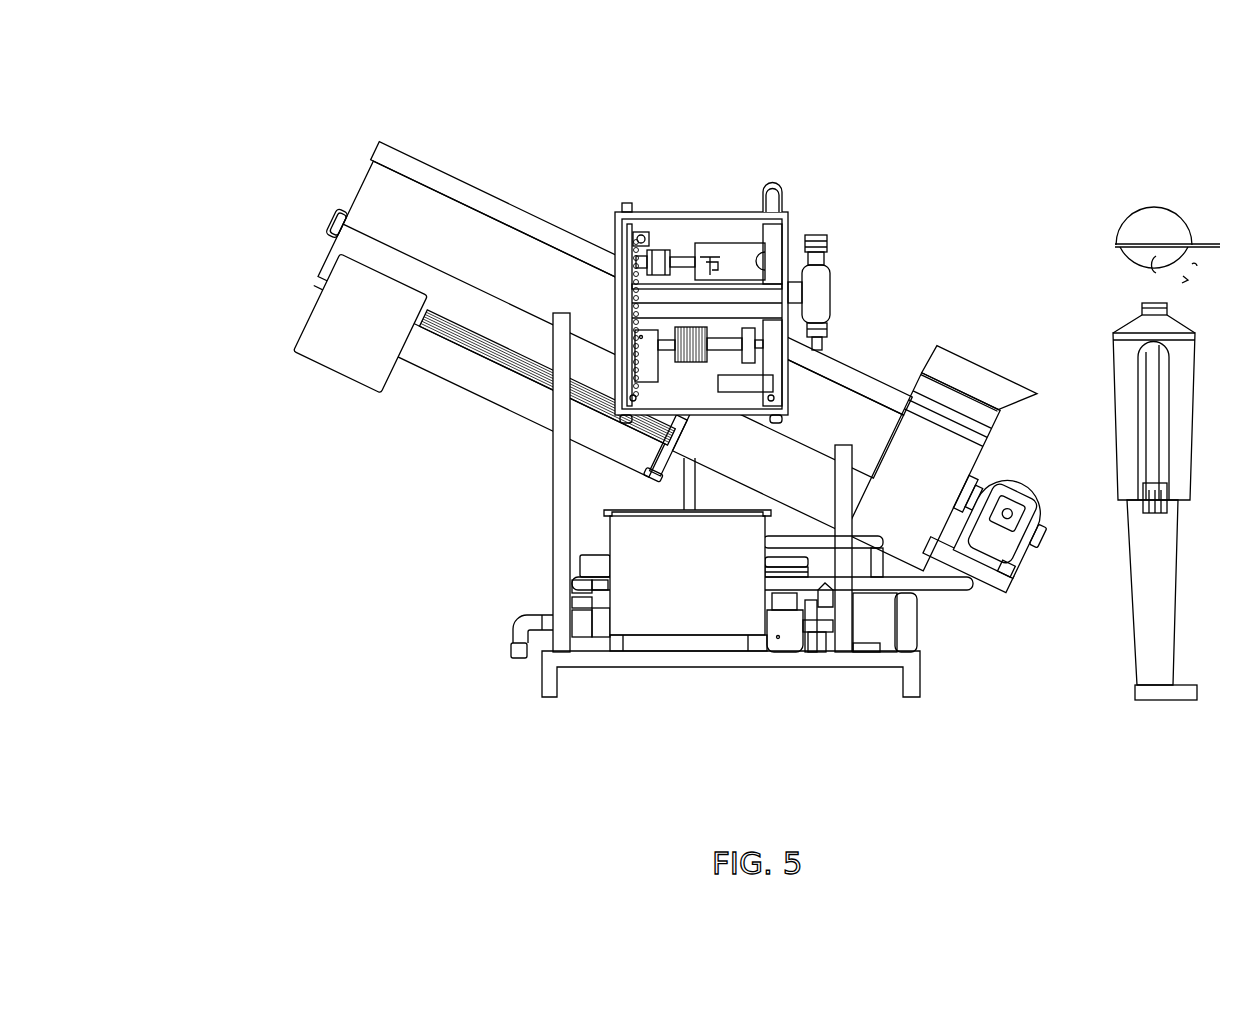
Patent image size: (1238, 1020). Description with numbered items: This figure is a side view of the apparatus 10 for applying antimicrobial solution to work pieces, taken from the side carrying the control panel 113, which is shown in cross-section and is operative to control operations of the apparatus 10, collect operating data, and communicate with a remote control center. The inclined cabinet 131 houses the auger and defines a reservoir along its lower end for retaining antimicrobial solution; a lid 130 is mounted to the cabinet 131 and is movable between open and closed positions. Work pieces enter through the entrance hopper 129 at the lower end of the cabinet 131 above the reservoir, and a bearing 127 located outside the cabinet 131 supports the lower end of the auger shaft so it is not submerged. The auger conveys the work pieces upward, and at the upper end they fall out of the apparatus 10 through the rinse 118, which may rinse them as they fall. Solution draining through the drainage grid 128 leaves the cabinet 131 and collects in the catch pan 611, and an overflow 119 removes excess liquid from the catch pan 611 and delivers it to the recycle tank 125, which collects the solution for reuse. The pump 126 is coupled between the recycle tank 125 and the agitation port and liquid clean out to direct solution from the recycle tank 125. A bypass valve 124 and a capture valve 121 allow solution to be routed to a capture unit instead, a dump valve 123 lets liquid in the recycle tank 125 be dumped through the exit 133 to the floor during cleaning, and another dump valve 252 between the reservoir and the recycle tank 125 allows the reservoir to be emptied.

The apparatus 10 is at (323, 94).
The control panel 113 is at (680, 210).
The rinse 118 is at (315, 350).
The overflow 119 is at (652, 480).
The capture valve 121 is at (587, 565).
The dump valve 123 is at (575, 590).
The bypass valve 124 is at (790, 557).
The recycle tank 125 is at (694, 620).
The pump 126 is at (922, 623).
The bearing 127 is at (1010, 487).
The drainage grid 128 is at (443, 327).
The entrance hopper 129 is at (990, 347).
The lid 130 is at (443, 182).
The cabinet 131 is at (378, 190).
The exit 133 is at (520, 662).
The dump valve 252 is at (788, 632).
The catch pan 611 is at (503, 395).